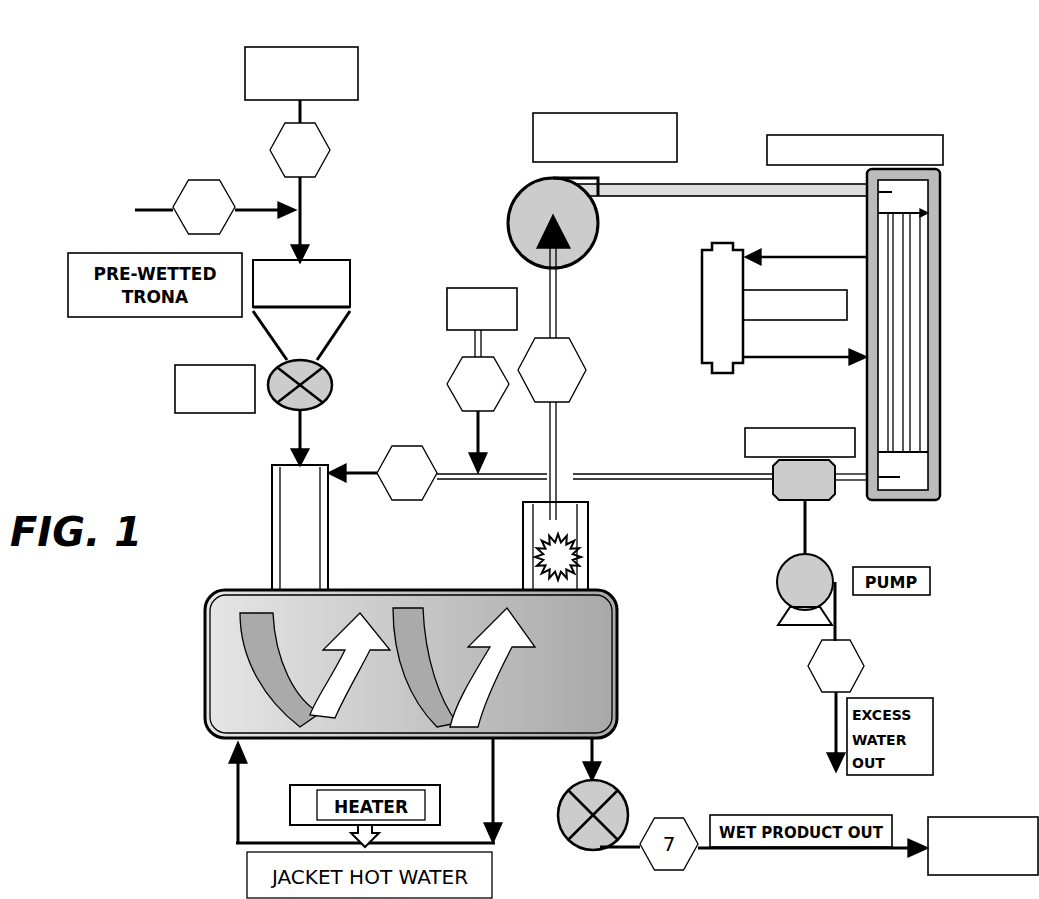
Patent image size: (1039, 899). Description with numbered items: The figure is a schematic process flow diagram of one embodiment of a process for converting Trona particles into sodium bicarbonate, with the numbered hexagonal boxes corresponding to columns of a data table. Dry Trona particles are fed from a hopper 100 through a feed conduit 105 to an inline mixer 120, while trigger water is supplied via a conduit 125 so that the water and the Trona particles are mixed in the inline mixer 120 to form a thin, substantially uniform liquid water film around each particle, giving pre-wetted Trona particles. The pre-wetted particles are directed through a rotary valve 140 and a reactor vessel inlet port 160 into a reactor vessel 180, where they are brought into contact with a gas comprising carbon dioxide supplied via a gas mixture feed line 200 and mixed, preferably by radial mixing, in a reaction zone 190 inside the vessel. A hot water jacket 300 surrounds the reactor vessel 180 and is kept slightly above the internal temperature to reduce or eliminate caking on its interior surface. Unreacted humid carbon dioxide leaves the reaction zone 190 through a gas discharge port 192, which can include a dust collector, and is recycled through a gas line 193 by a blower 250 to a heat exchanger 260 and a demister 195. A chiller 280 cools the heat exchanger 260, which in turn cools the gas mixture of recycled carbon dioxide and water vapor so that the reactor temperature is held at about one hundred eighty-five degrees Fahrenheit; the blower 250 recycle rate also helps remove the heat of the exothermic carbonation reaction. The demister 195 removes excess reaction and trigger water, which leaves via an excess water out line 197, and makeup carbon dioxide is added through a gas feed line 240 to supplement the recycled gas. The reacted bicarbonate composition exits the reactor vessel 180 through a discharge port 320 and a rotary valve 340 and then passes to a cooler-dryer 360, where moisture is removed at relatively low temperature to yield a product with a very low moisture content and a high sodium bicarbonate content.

The hopper 100 is at (358, 78).
The feed conduit 105 is at (305, 108).
The inline mixer 120 is at (350, 278).
The conduit 125 is at (162, 210).
The rotary valve 140 is at (333, 385).
The reactor vessel inlet port 160 is at (272, 556).
The reactor vessel 180 is at (460, 635).
The reaction zone 190 is at (453, 633).
The gas discharge port 192 is at (590, 508).
The gas line 193 is at (560, 418).
The demister 195 is at (778, 500).
The excess water out line 197 is at (836, 631).
The gas mixture feed line 200 is at (363, 490).
The gas feed line 240 is at (474, 430).
The blower 250 is at (537, 183).
The heat exchanger 260 is at (940, 290).
The chiller 280 is at (700, 318).
The hot water jacket 300 is at (405, 638).
The discharge port 320 is at (597, 752).
The rotary valve 340 is at (622, 790).
The cooler-dryer 360 is at (990, 817).